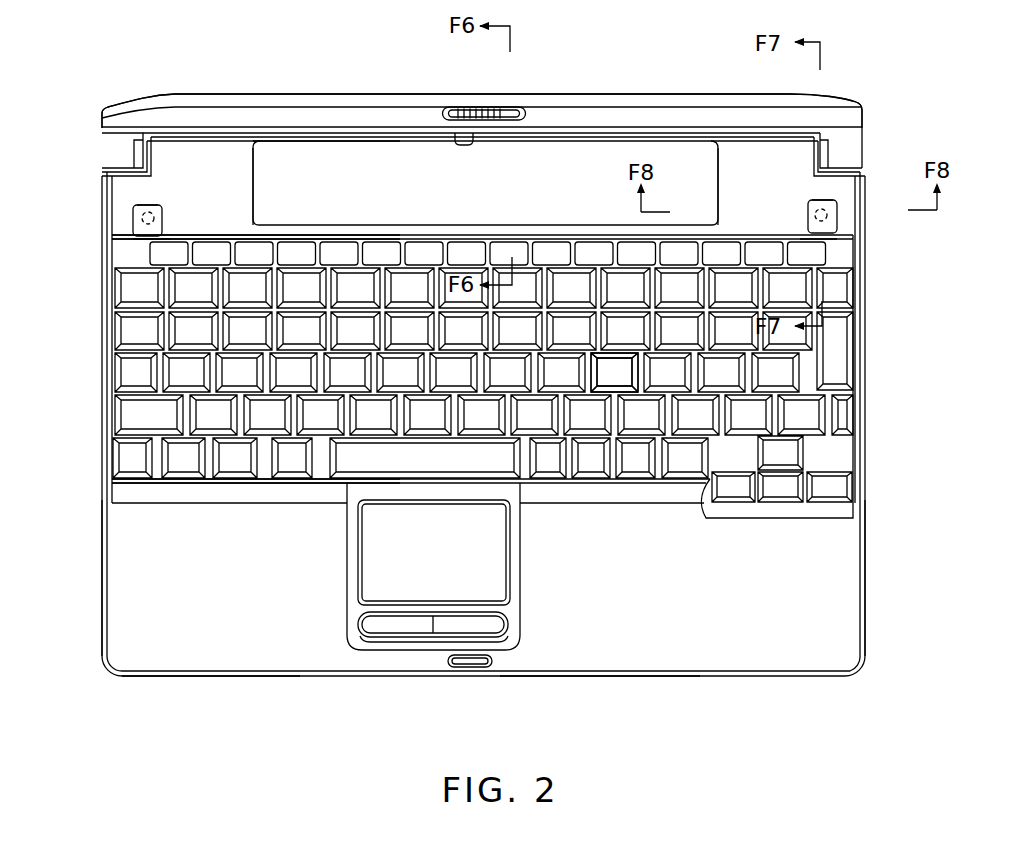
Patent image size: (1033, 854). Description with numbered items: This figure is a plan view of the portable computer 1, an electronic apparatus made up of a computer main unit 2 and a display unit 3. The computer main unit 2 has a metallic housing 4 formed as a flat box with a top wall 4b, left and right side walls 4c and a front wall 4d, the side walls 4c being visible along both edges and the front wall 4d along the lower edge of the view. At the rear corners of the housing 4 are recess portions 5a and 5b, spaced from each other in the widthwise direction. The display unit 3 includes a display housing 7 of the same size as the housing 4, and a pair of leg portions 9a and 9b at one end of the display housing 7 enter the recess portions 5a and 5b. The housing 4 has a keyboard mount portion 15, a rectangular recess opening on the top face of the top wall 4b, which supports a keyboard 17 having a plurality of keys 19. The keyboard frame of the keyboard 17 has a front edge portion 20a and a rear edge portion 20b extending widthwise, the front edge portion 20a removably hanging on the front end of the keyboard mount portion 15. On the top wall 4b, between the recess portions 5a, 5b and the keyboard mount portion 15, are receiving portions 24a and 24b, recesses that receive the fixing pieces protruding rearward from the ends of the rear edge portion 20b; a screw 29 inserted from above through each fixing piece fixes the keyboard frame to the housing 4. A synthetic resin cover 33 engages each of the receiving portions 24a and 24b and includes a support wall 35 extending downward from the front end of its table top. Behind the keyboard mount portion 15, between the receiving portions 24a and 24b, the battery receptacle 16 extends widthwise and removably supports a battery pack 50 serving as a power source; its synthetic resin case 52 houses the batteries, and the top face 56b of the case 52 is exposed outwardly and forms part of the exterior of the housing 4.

The portable computer 1 is at (135, 86).
The computer main unit 2 is at (188, 686).
The display unit 3 is at (214, 88).
The housing 4 is at (748, 678).
The top wall 4b is at (770, 158).
The side wall 4c is at (100, 527).
The front wall 4d is at (578, 678).
The recess portion 5a is at (120, 166).
The recess portion 5b is at (837, 161).
The display housing 7 is at (393, 108).
The leg portion 9a is at (118, 146).
The leg portion 9b is at (840, 141).
The keyboard mount portion 15 is at (447, 398).
The battery receptacle 16 is at (713, 160).
The keyboard 17 is at (241, 466).
The keys 19 is at (638, 456).
The front edge portion 20a is at (160, 481).
The rear edge portion 20b is at (150, 240).
The receiving portion 24a is at (163, 222).
The receiving portion 24b is at (808, 218).
The screw 29 is at (165, 208).
The cover 33 is at (148, 205).
The support wall 35 is at (133, 234).
The battery pack 50 is at (585, 160).
The case 52 is at (340, 147).
The top face 56b is at (283, 165).